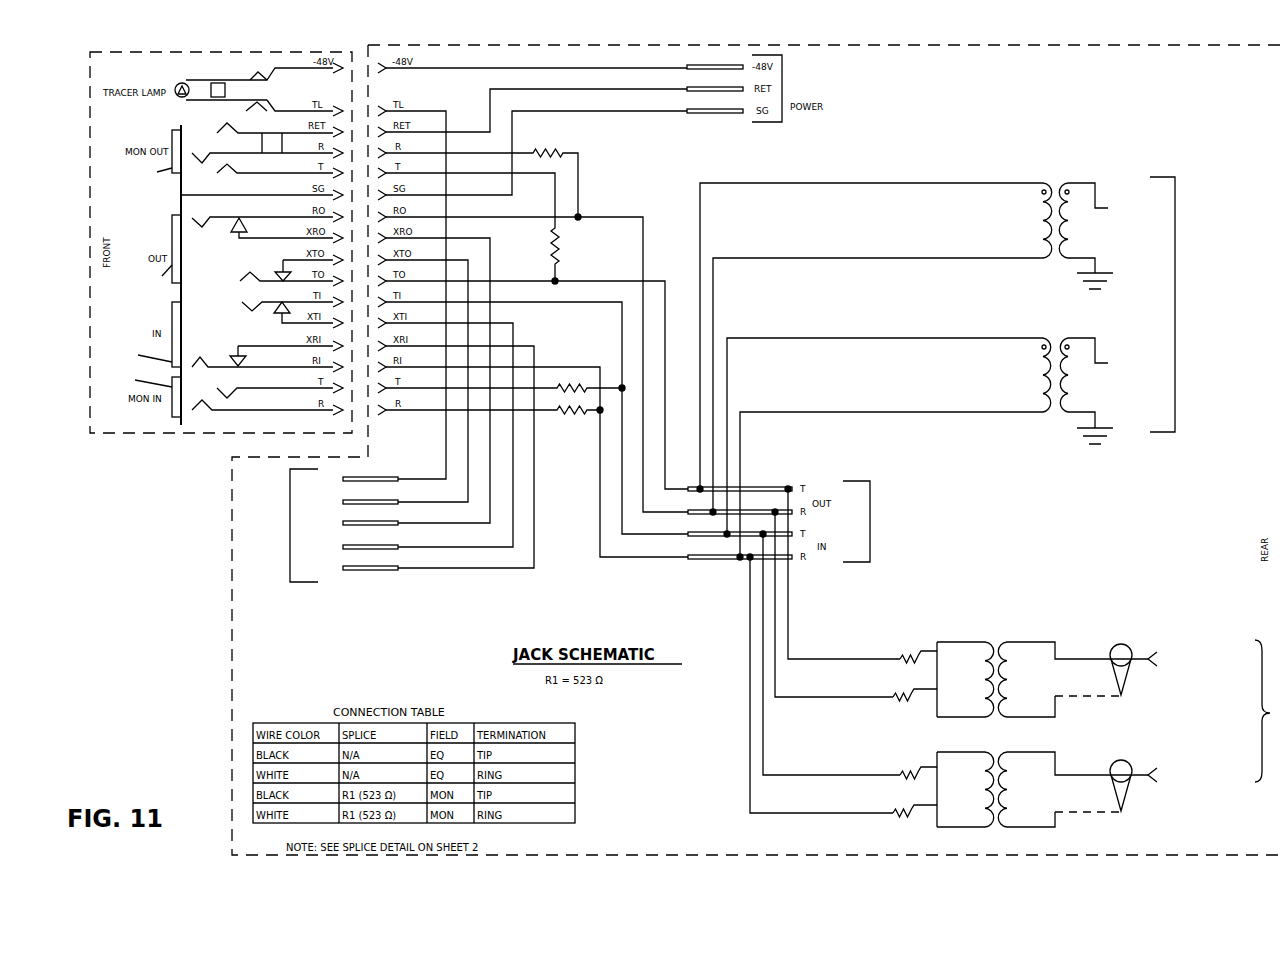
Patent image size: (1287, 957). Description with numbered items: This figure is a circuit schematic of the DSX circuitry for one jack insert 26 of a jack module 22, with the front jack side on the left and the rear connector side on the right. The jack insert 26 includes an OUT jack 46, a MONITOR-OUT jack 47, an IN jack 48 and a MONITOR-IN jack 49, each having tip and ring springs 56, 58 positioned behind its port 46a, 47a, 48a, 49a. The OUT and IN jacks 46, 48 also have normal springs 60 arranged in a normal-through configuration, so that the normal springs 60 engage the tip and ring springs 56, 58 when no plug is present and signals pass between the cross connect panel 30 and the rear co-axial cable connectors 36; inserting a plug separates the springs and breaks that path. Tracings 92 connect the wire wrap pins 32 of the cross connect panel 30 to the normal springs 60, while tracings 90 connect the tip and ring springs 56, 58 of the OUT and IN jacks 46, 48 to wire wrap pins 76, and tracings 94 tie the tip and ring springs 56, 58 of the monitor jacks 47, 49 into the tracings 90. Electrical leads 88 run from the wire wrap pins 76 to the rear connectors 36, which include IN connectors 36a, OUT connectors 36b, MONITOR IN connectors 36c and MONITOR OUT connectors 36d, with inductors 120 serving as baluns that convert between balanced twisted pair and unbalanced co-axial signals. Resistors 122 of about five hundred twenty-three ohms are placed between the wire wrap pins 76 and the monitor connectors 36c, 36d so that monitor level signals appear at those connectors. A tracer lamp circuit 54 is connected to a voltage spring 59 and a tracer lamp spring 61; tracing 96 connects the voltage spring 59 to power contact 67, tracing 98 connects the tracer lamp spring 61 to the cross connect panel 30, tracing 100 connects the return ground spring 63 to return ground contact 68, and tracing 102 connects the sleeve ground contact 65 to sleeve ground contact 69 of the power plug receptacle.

The jack module 22 is at (205, 613).
The jack insert 26 is at (123, 435).
The cross connect panel 30 is at (305, 583).
The wire wrap pins 32 is at (362, 572).
The co-axial cable connectors 36 is at (1177, 369).
The IN connectors 36a is at (1103, 350).
The OUT connectors 36b is at (1103, 195).
The MONITOR IN connectors 36c is at (1130, 755).
The MONITOR OUT connectors 36d is at (1130, 632).
The OUT jack 46 is at (192, 233).
The OUT port 46a is at (148, 278).
The MONITOR-OUT jack 47 is at (195, 147).
The MONITOR-OUT port 47a is at (145, 174).
The IN jack 48 is at (188, 315).
The IN port 48a is at (135, 356).
The MONITOR-IN jack 49 is at (200, 425).
The MONITOR-IN port 49a is at (139, 393).
The tracer lamp circuit 54 is at (178, 85).
The tip springs 56 is at (240, 172).
The ring springs 58 is at (240, 153).
The voltage spring 59 is at (284, 68).
The normal springs 60 is at (293, 332).
The tracer lamp spring 61 is at (295, 110).
The return ground spring 63 is at (220, 130).
The sleeve ground contact 65 is at (205, 197).
The power contact 67 is at (713, 65).
The return ground contact 68 is at (708, 89).
The sleeve ground contact 69 is at (713, 113).
The wire wrap pins 76 is at (752, 487).
The electrical leads 88 is at (853, 184).
The tracings 90 is at (668, 413).
The tracings 92 is at (428, 502).
The tracings 94 is at (570, 152).
The tracing 96 is at (577, 67).
The tracing 98 is at (430, 477).
The tracing 100 is at (488, 110).
The tracing 102 is at (512, 137).
The inductors 120 is at (1030, 712).
The resistors 122 is at (915, 657).